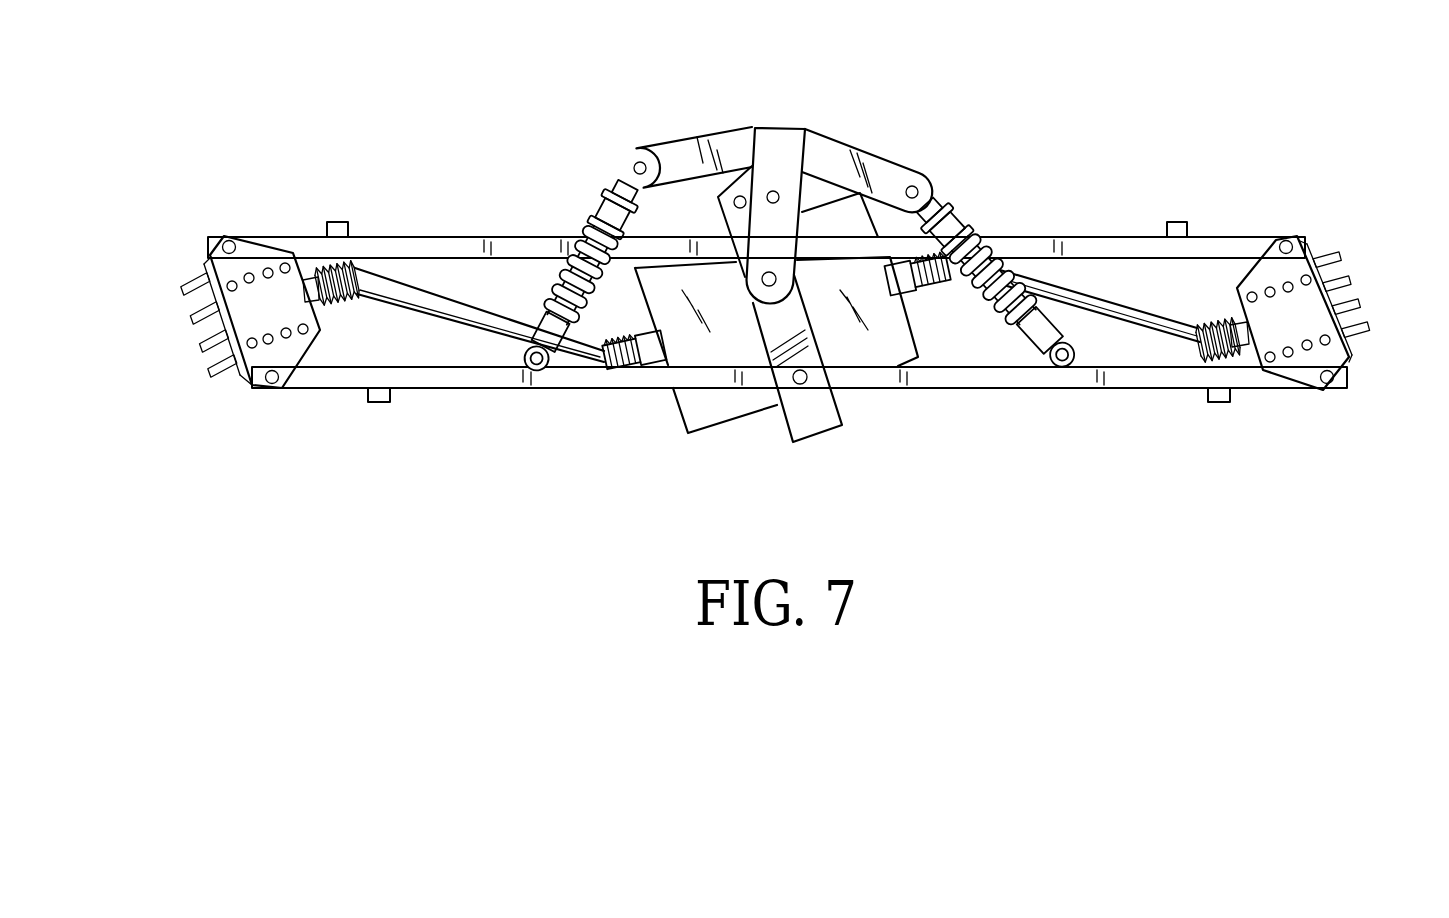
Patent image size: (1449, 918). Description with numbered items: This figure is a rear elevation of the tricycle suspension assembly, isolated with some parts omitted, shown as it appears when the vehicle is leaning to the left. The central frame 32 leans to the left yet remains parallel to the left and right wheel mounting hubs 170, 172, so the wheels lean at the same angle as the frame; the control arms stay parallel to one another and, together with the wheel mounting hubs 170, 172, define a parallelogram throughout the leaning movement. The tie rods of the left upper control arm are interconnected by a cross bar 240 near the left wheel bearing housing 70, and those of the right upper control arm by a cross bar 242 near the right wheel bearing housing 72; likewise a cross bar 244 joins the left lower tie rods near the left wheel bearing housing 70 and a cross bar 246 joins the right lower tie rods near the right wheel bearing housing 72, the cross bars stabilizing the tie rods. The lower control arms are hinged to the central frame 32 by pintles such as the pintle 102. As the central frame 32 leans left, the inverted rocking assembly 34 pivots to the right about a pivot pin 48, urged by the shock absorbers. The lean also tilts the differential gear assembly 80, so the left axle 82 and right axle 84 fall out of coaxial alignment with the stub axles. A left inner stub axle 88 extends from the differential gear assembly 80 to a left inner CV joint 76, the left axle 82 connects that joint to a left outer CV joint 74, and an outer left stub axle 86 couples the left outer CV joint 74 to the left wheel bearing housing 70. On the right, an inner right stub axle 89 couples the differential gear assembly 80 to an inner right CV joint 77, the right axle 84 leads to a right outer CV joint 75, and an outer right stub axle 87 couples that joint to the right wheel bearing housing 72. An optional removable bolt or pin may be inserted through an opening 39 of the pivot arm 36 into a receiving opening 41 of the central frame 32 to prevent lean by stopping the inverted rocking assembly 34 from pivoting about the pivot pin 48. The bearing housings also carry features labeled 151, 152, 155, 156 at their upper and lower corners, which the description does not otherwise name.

The central frame 32 is at (727, 219).
The inverted rocking assembly 34 is at (780, 132).
The pivot arm 36 is at (800, 175).
The opening 39 is at (772, 190).
The receiving opening 41 is at (737, 199).
The pivot pin 48 is at (765, 287).
The left wheel bearing housing 70 is at (247, 257).
The right wheel bearing housing 72 is at (1272, 273).
The left outer CV joint 74 is at (350, 303).
The right outer CV joint 75 is at (1211, 320).
The left inner CV joint 76 is at (620, 358).
The inner right CV joint 77 is at (943, 277).
The differential gear assembly 80 is at (713, 410).
The left axle 82 is at (465, 333).
The right axle 84 is at (1077, 287).
The outer left stub axle 86 is at (308, 285).
The outer right stub axle 87 is at (1247, 350).
The left inner stub axle 88 is at (645, 345).
The inner right stub axle 89 is at (915, 281).
The pintle 102 is at (807, 384).
The left upper pivot hole 151 is at (222, 247).
The right upper pivot hole 152 is at (1290, 238).
The left lower pivot hole 155 is at (266, 384).
The right lower pivot hole 156 is at (1330, 383).
The left wheel mounting hub 170 is at (202, 333).
The right wheel mounting hub 172 is at (1343, 297).
The cross bar 240 is at (346, 221).
The cross bar 242 is at (1175, 222).
The cross bar 244 is at (380, 404).
The cross bar 246 is at (1217, 403).